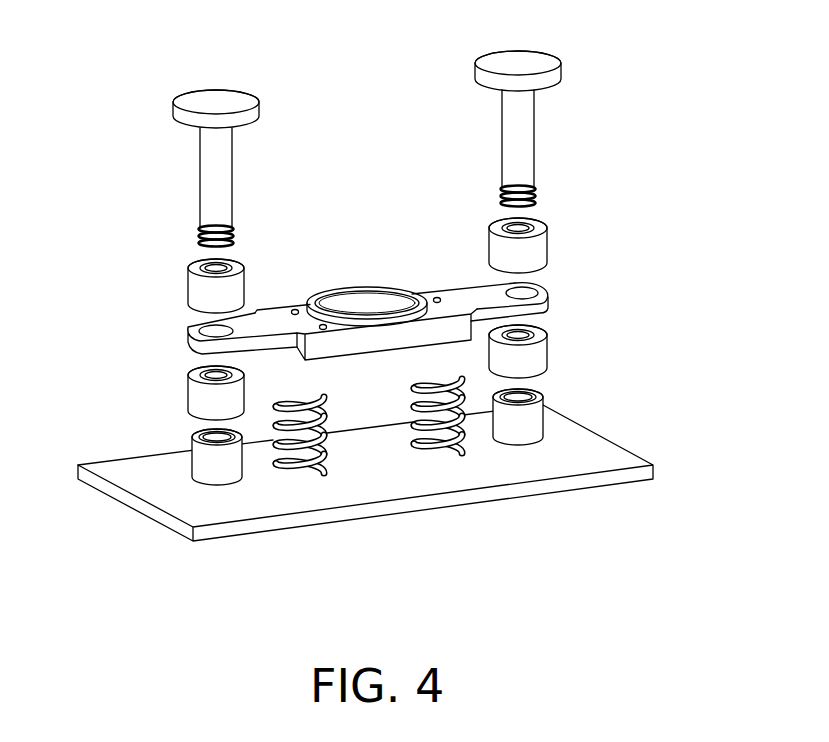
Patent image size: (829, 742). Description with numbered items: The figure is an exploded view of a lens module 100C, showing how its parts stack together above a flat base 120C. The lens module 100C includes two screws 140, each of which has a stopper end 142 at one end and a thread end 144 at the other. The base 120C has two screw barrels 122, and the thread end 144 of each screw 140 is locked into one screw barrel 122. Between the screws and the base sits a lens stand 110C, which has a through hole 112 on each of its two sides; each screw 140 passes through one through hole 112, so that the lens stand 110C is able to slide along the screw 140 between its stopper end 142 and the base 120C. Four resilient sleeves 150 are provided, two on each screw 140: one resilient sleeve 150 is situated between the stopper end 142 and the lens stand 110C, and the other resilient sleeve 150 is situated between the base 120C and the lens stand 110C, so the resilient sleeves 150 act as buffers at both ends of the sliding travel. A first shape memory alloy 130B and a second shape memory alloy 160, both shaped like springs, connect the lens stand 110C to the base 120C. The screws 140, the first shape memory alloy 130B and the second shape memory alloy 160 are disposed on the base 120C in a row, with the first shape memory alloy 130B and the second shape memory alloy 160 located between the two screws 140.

The lens module 100C is at (386, 335).
The lens stand 110C is at (392, 321).
The through hole 112 is at (196, 325).
The base 120C is at (550, 466).
The screw barrel 122 is at (203, 463).
The first shape memory alloy 130B is at (310, 473).
The screw 140 is at (535, 140).
The stopper end 142 is at (176, 108).
The thread end 144 is at (200, 229).
The resilient sleeve 150 is at (192, 297).
The second shape memory alloy 160 is at (447, 450).